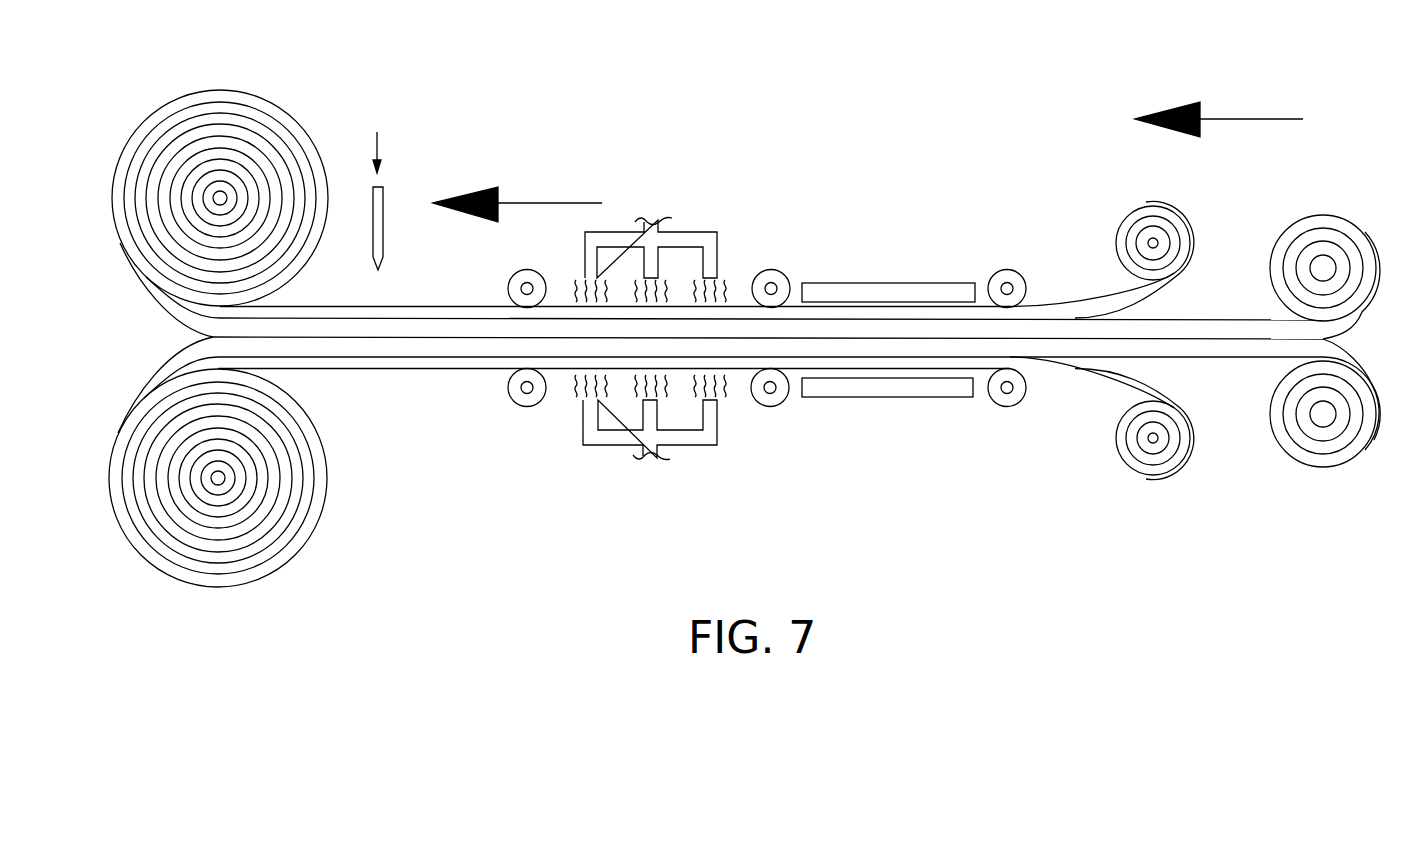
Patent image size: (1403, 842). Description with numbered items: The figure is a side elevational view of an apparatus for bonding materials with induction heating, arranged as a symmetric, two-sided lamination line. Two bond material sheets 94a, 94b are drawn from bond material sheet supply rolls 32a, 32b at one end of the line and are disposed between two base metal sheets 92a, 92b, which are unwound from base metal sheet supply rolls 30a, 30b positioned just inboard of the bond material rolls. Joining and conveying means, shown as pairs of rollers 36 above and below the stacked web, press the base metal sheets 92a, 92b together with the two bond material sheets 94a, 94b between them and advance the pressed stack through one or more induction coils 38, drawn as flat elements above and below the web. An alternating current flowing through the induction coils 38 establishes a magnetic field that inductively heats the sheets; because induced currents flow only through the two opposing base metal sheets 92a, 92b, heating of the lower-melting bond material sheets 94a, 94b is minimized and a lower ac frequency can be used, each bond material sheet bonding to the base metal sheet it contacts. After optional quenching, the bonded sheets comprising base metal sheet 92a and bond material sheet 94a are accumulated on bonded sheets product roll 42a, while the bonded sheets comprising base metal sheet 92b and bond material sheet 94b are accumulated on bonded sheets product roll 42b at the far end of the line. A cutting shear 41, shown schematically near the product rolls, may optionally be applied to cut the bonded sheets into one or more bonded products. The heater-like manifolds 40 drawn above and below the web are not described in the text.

The bonded sheets product roll 42a is at (328, 95).
The bonded sheets product roll 42b is at (327, 585).
The cutting shear 41 is at (383, 262).
The rollers 36 is at (528, 277).
The heater 40 is at (695, 242).
The induction coils 38 is at (900, 290).
The base metal sheet supply roll 30a is at (1128, 200).
The base metal sheet supply roll 30b is at (1113, 482).
The bond material sheet supply roll 32a is at (1282, 203).
The bond material sheet supply roll 32b is at (1280, 488).
The base metal sheet 92a is at (1087, 310).
The base metal sheet 92b is at (1090, 372).
The bond material sheet 94a is at (1180, 328).
The bond material sheet 94b is at (1202, 352).